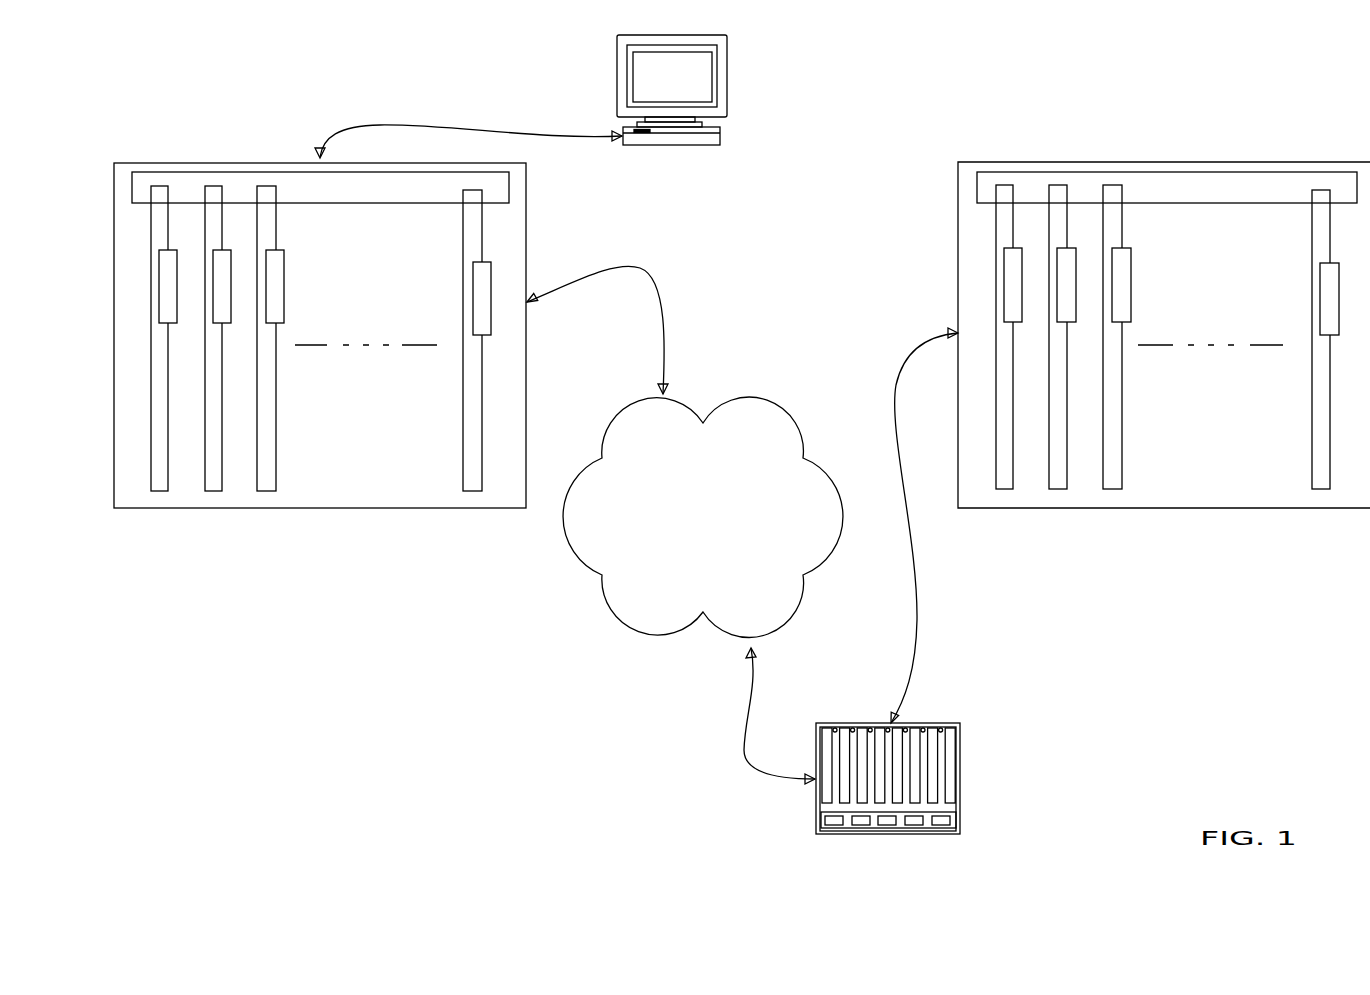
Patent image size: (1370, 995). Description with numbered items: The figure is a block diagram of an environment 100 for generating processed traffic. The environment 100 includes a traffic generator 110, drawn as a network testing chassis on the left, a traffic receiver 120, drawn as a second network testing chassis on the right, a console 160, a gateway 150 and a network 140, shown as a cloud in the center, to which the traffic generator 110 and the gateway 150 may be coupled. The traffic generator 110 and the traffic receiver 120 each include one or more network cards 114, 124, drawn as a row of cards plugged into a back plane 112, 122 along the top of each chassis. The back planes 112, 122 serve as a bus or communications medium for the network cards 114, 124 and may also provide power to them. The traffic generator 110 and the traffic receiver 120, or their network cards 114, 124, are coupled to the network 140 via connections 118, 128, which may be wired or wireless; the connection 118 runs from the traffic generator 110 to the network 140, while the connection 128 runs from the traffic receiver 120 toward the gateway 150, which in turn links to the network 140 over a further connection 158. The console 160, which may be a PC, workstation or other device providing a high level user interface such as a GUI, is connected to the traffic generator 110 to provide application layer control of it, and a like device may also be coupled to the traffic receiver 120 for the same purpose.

The environment 100 is at (485, 736).
The traffic generator 110 is at (187, 163).
The back plane 112 is at (293, 178).
The network cards 114 is at (133, 472).
The connection 118 is at (605, 264).
The traffic receiver 120 is at (1030, 162).
The back plane 122 is at (1166, 187).
The network cards 124 is at (977, 470).
The connection 128 is at (893, 395).
The network 140 is at (703, 517).
The gateway 150 is at (888, 808).
The network connection 158 is at (743, 727).
The console 160 is at (521, 119).